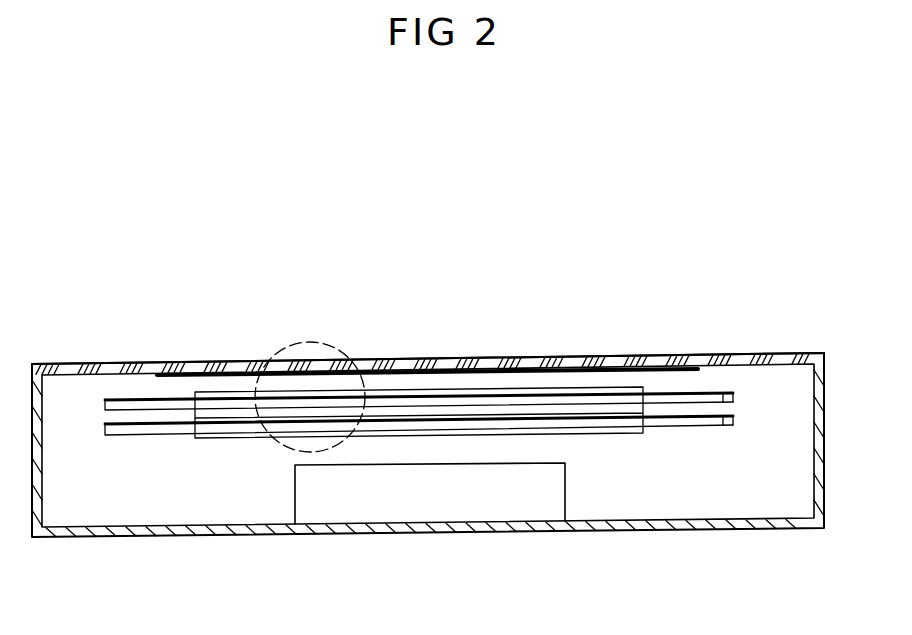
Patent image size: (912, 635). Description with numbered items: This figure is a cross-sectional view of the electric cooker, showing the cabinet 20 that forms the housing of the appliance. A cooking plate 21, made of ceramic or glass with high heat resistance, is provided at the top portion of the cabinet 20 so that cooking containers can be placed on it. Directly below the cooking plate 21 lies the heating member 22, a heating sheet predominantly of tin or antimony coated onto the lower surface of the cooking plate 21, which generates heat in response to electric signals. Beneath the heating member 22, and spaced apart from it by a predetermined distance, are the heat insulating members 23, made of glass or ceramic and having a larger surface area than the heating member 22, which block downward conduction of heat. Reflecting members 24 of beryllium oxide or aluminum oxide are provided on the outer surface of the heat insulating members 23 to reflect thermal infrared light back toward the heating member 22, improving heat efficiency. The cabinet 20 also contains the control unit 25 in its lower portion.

The cabinet 20 is at (707, 531).
The cooking plate 21 is at (405, 358).
The heating member 22 is at (177, 388).
The heat insulating member 23 is at (733, 418).
The reflecting members 24 is at (722, 412).
The control unit 25 is at (412, 510).